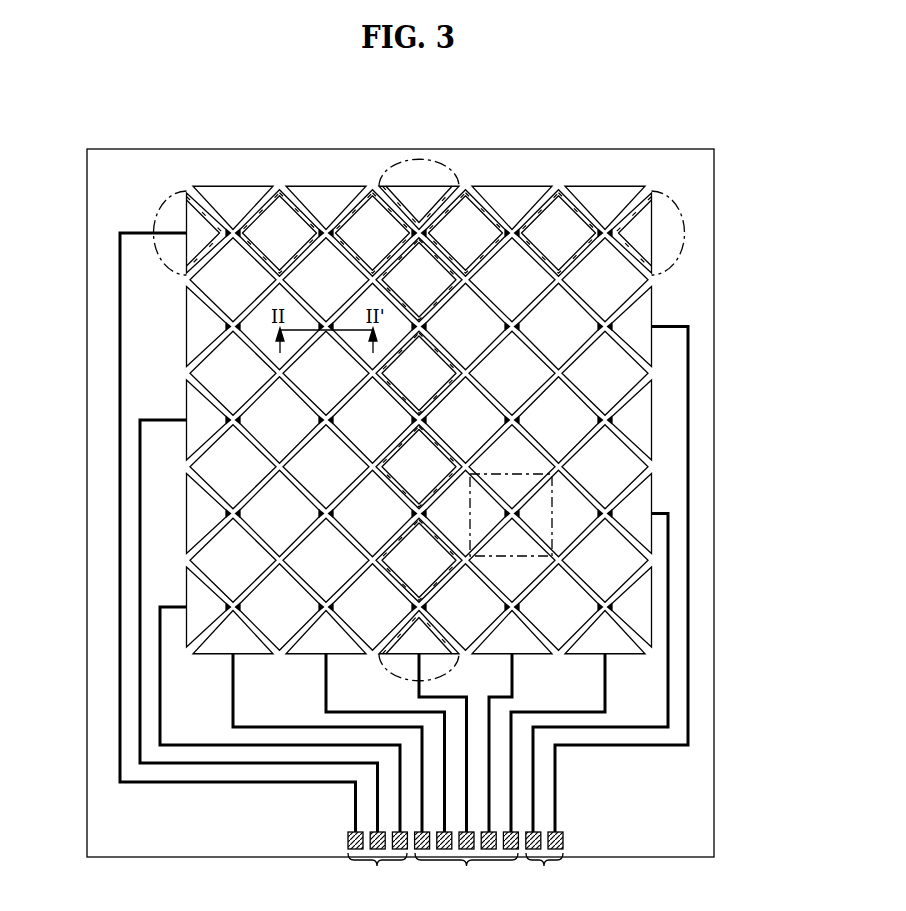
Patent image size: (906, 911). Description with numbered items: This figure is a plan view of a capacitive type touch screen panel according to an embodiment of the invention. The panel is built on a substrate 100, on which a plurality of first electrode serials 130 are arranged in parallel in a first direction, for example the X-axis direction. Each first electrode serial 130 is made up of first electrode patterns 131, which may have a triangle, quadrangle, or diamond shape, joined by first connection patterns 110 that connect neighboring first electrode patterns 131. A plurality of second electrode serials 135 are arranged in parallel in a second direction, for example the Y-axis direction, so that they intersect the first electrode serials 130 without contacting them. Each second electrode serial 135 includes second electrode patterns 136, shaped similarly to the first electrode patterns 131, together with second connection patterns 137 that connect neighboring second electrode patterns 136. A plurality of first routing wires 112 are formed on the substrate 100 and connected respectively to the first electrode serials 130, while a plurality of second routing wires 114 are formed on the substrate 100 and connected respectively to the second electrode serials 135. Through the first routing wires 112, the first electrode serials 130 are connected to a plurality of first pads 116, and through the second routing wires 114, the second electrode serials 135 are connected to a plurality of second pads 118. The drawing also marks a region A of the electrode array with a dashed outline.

The substrate 100 is at (716, 832).
The first connection pattern 110 is at (623, 594).
The first routing wire 112 is at (118, 308).
The second routing wire 114 is at (600, 695).
The first pad 116 is at (455, 863).
The second pad 118 is at (467, 863).
The first electrode serial 130 is at (463, 187).
The first electrode pattern 131 is at (543, 230).
The second electrode serial 135 is at (424, 158).
The second electrode pattern 136 is at (613, 280).
The second connection pattern 137 is at (605, 333).
The enlarged region A is at (552, 512).